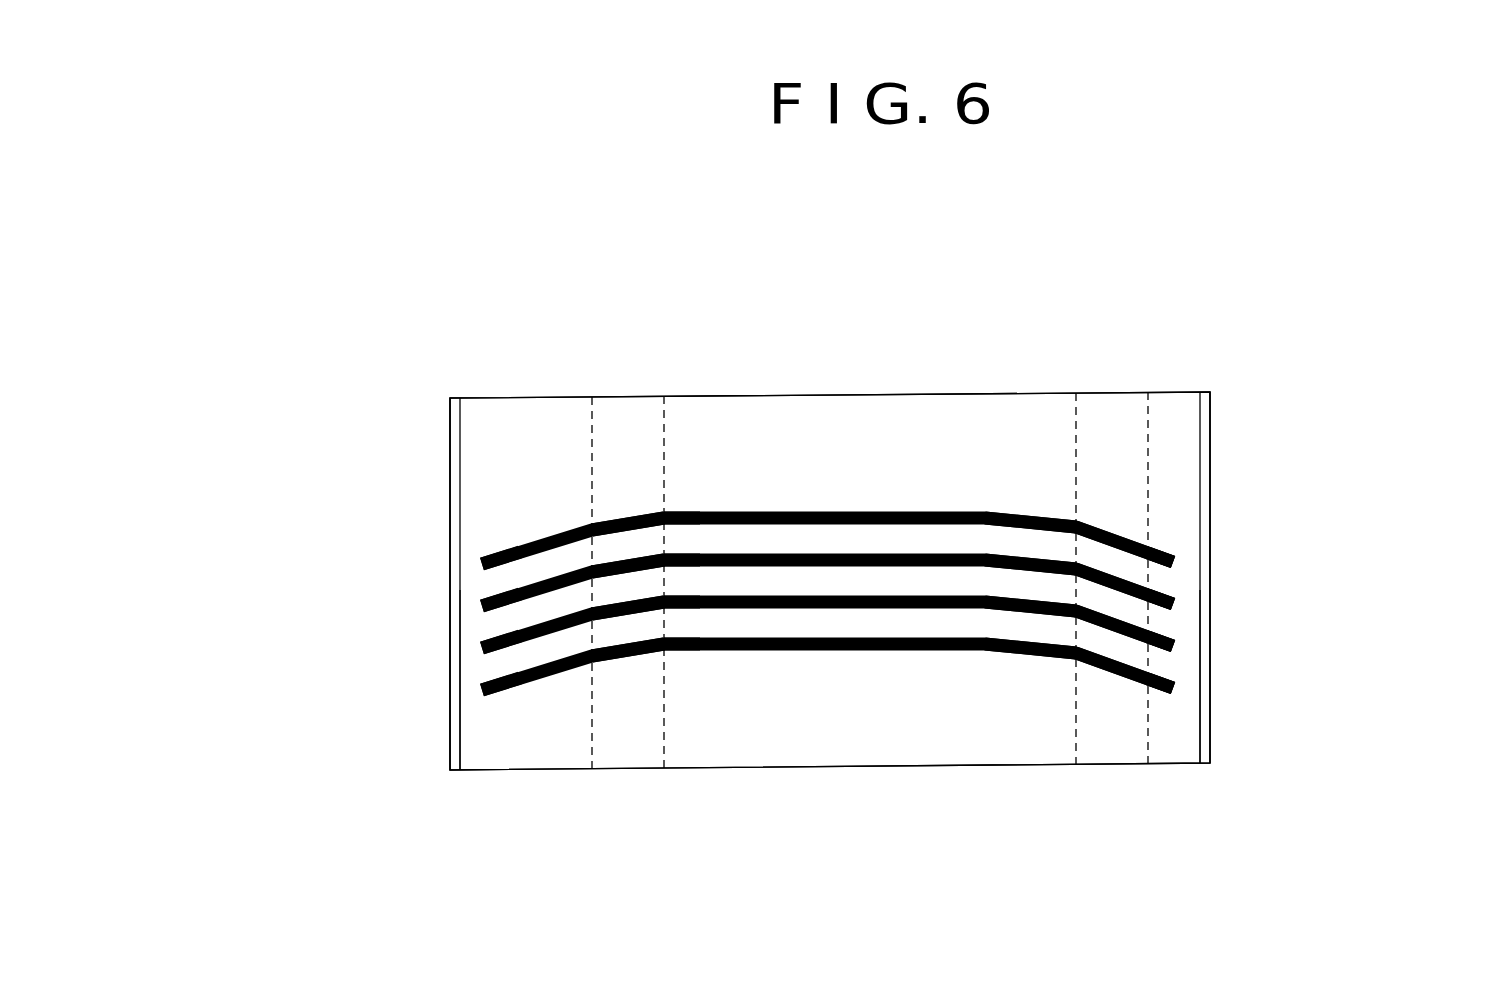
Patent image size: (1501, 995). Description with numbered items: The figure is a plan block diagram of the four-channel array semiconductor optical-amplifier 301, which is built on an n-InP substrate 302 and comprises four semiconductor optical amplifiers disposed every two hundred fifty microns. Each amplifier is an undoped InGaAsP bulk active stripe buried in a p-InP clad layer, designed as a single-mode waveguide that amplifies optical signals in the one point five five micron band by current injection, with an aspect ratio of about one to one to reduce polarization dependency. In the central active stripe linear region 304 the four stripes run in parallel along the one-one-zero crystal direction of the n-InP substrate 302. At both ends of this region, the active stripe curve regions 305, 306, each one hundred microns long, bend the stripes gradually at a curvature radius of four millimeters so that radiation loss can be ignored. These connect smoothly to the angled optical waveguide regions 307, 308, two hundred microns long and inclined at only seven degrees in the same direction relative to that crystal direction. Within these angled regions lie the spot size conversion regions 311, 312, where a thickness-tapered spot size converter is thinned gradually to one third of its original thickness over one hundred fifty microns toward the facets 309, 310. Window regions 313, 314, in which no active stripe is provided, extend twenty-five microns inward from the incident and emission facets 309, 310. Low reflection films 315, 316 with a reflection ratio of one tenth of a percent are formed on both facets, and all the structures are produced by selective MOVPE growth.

The 4-channel array semiconductor optical-amplifier 301 is at (487, 773).
The n-InP substrate 302 is at (1196, 765).
The active stripe linear region 304 is at (798, 453).
The active stripe curve region 305 is at (612, 410).
The active stripe curve region 306 is at (1113, 412).
The angled optical waveguide region 307 is at (475, 417).
The angled optical waveguide region 308 is at (1164, 408).
The facet 309 is at (449, 397).
The facet 310 is at (1209, 392).
The spot size conversion region 311 is at (556, 682).
The spot size conversion region 312 is at (1110, 682).
The window region 313 is at (467, 676).
The window region 314 is at (1178, 630).
The low reflection film 315 is at (448, 543).
The low reflection film 316 is at (1205, 467).